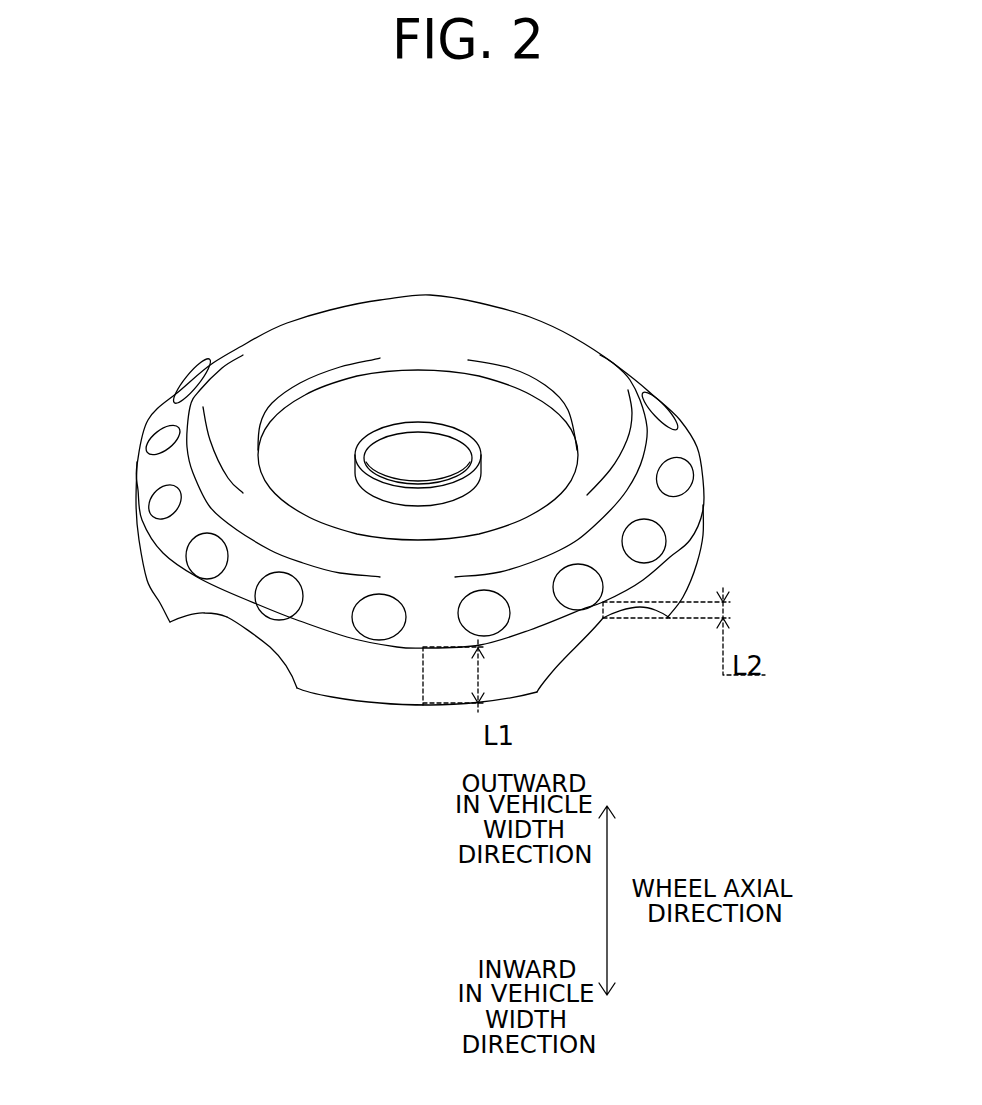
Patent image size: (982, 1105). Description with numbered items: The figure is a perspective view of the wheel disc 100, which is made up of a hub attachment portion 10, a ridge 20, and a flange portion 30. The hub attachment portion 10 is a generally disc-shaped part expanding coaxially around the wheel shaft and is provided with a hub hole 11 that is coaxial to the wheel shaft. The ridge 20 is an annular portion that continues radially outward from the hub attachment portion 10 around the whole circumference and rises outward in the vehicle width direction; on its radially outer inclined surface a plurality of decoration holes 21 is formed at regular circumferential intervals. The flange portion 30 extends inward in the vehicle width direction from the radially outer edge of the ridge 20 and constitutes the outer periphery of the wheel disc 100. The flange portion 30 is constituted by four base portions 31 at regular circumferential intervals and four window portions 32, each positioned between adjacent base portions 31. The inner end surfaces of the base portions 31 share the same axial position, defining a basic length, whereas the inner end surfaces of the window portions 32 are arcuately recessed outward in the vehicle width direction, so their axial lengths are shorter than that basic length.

The wheel disc 100 is at (565, 273).
The hub attachment portion 10 is at (432, 392).
The hub hole 11 is at (393, 458).
The ridge 20 is at (567, 341).
The decoration holes 21 is at (677, 482).
The flange portion 30 is at (419, 542).
The base portions 31 is at (683, 565).
The window portions 32 is at (272, 632).